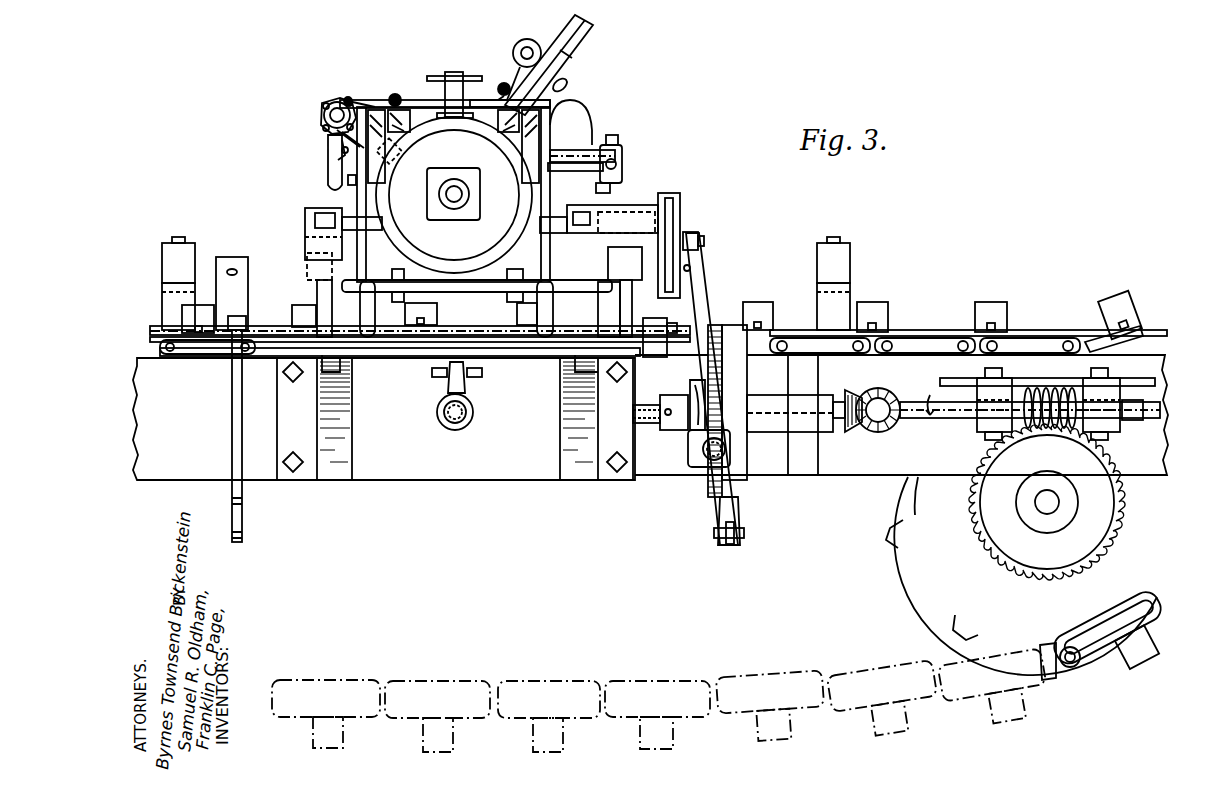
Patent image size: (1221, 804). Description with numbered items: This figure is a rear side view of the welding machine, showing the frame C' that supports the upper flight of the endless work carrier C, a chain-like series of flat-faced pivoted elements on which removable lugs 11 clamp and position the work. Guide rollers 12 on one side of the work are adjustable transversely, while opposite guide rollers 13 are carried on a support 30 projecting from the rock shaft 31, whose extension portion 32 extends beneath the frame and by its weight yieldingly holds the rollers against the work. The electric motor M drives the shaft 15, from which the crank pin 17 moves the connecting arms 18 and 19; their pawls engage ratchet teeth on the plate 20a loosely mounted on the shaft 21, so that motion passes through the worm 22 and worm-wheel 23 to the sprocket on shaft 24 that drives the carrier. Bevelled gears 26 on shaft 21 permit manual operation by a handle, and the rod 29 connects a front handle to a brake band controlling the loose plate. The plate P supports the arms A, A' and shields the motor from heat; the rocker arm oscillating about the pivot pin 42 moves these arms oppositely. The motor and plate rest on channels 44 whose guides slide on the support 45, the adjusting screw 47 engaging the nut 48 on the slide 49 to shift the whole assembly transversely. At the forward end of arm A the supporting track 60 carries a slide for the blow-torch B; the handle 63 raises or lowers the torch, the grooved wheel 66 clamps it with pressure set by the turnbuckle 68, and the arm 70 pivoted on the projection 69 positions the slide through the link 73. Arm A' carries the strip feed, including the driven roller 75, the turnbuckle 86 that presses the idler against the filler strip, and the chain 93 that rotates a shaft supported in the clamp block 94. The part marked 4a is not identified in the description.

The removable lugs 11 is at (182, 312).
The guide rollers 12 is at (192, 255).
The guide rollers 13 is at (307, 270).
The shaft 15 is at (335, 215).
The crank pin 17 is at (704, 240).
The connecting arm 18 is at (700, 302).
The connecting arm 19 is at (692, 268).
The plate 20a is at (728, 328).
The shaft 21 is at (918, 418).
The worm 22 is at (1050, 392).
The worm-wheel 23 is at (1125, 503).
The shaft 24 is at (1047, 505).
The bevelled gears 26 is at (872, 432).
The rod 29 is at (728, 545).
The support 30 is at (300, 290).
The rock shaft 31 is at (258, 325).
The extension portion 32 is at (232, 428).
The pivot pin 42 is at (450, 73).
The channels 44 is at (362, 312).
The support 45 is at (338, 372).
The adjusting screw 47 is at (468, 415).
The nut 48 is at (472, 393).
The slide 49 is at (532, 358).
The supporting track 60 is at (580, 138).
The handle 63 is at (568, 85).
The grooved wheel 66 is at (526, 40).
The turnbuckle 68 is at (501, 83).
The projection 69 is at (612, 152).
The arm 70 is at (624, 166).
The link 73 is at (582, 170).
The driven roller 75 is at (350, 96).
The turnbuckle 86 is at (397, 95).
The chain 93 is at (322, 128).
The clamp block 94 is at (325, 113).
The arm A is at (558, 132).
The arm A' is at (342, 160).
The blow-torch B is at (560, 48).
The work carrier C is at (662, 531).
The frame C' is at (839, 373).
The electric motor M is at (476, 201).
The plate P is at (481, 118).
The frame part 4a is at (740, 385).